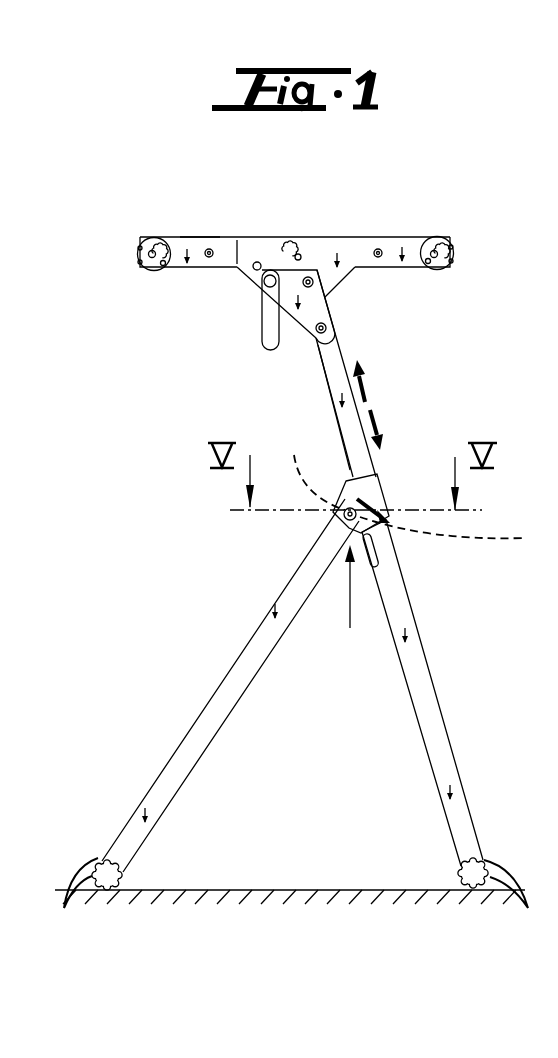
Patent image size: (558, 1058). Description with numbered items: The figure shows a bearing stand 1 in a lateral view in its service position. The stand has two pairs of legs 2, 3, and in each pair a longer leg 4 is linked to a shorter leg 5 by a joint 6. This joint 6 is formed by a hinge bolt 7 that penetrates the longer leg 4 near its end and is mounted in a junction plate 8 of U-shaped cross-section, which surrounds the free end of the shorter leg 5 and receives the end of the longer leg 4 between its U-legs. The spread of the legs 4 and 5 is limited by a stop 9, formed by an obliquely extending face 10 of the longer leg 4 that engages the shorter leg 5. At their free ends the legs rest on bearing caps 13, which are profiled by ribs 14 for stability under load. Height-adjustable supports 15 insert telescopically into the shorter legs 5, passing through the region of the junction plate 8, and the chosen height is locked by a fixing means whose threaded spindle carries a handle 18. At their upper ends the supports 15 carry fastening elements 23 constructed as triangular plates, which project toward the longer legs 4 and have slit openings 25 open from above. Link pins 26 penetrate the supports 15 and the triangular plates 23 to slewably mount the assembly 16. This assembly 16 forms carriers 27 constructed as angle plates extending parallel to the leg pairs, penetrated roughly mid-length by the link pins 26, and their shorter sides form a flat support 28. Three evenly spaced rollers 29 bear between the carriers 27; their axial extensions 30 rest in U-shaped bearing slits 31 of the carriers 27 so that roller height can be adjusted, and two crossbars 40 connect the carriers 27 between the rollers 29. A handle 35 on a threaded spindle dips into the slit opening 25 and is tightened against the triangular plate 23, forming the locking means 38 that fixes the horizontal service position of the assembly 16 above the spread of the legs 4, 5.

The bearing stand 1 is at (251, 241).
The pair of legs 2 is at (270, 685).
The pair of legs 3 is at (437, 373).
The longer leg 4 is at (237, 685).
The shorter leg 5 is at (417, 655).
The joint 6 is at (347, 602).
The hinge bolt 7 is at (340, 515).
The junction plate 8 is at (370, 503).
The stop 9 is at (452, 536).
The obliquely extending face 10 is at (311, 465).
The bearing cap 13 is at (108, 868).
The rib 14 is at (297, 901).
The support 15 is at (327, 375).
The assembly 16 is at (426, 212).
The handle 18 is at (373, 565).
The fastening element 23 is at (318, 292).
The slit opening 25 is at (270, 275).
The link pin 26 is at (312, 279).
The carrier 27 is at (243, 258).
The flat support 28 is at (200, 236).
The roller 29 is at (147, 247).
The axial extension 30 is at (151, 257).
The bearing slit 31 is at (165, 265).
The handle 35 is at (270, 330).
The locking means 38 is at (230, 318).
The crossbar 40 is at (205, 252).